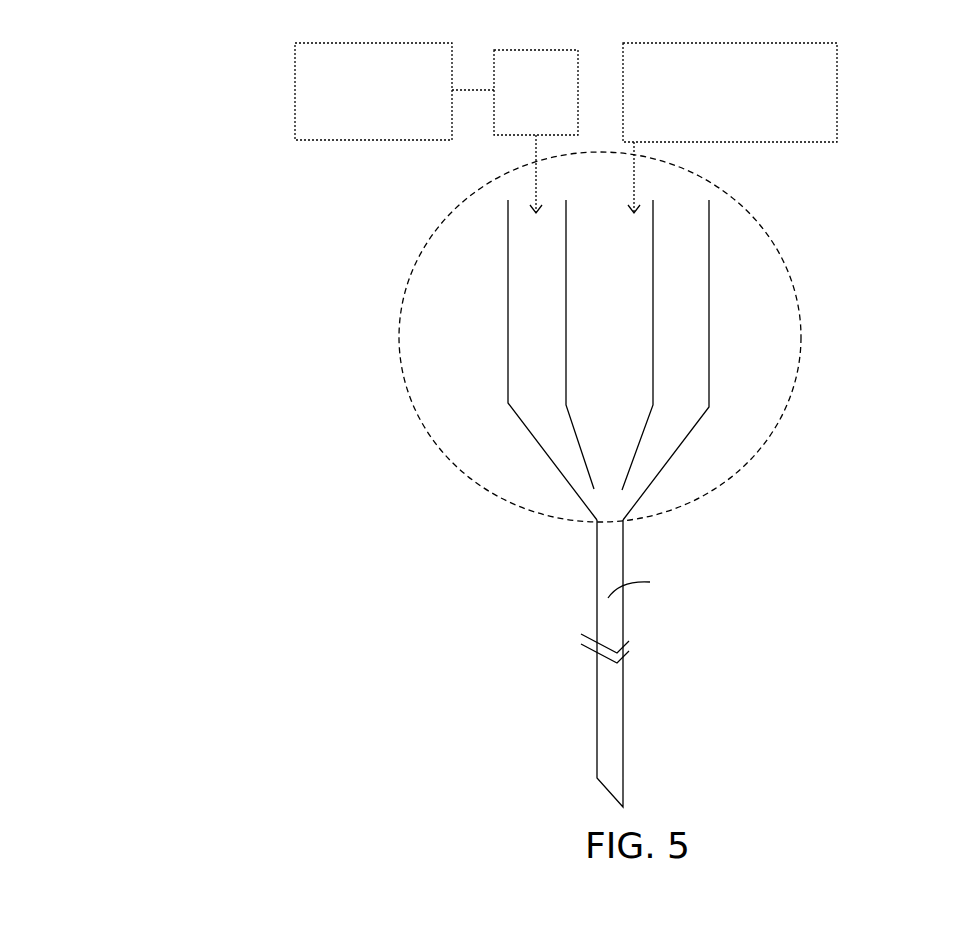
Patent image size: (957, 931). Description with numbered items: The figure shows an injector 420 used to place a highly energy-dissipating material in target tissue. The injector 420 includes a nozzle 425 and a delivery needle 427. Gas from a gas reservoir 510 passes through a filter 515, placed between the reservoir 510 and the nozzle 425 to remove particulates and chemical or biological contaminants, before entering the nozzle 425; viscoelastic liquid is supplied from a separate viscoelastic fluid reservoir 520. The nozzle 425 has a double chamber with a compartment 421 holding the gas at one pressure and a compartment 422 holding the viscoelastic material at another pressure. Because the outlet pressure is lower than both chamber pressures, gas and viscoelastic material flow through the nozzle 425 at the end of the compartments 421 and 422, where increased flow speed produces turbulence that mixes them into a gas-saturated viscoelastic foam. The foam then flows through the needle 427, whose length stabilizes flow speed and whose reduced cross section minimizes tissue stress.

The injector 420 is at (403, 439).
The compartment 421 is at (552, 360).
The compartment 422 is at (619, 345).
The nozzle 425 is at (800, 345).
The delivery needle 427 is at (623, 685).
The gas reservoir 510 is at (373, 91).
The filter 515 is at (536, 92).
The viscoelastic fluid reservoir 520 is at (730, 92).